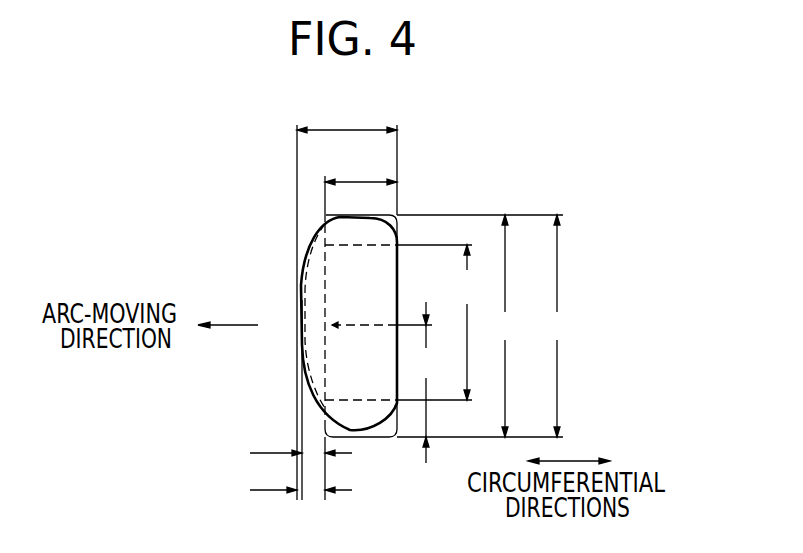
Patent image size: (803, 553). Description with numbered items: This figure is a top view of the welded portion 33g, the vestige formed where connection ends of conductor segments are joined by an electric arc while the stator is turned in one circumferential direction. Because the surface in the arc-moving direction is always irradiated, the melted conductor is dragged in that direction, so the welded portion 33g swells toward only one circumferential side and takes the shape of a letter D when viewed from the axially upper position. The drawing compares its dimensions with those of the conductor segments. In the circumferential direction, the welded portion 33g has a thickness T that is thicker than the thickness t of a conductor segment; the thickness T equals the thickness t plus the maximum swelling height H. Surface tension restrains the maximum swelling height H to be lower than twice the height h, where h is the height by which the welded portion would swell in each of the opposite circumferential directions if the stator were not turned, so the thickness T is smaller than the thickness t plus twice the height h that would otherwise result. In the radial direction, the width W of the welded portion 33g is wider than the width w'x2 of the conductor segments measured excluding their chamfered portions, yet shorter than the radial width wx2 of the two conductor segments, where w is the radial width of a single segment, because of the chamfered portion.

The welded portion 33g is at (348, 277).
The circumferential thickness T is at (347, 299).
The thickness of conductor segment t is at (361, 190).
The radial width of welded portion W is at (504, 326).
The radial width of two conductor segments wx2 is at (557, 326).
The width of conductor segments except chamfered portions w'x2 is at (463, 322).
The radial width of conductor segment w is at (426, 382).
The swelling height h is at (301, 400).
The maximum swelling height H is at (301, 478).